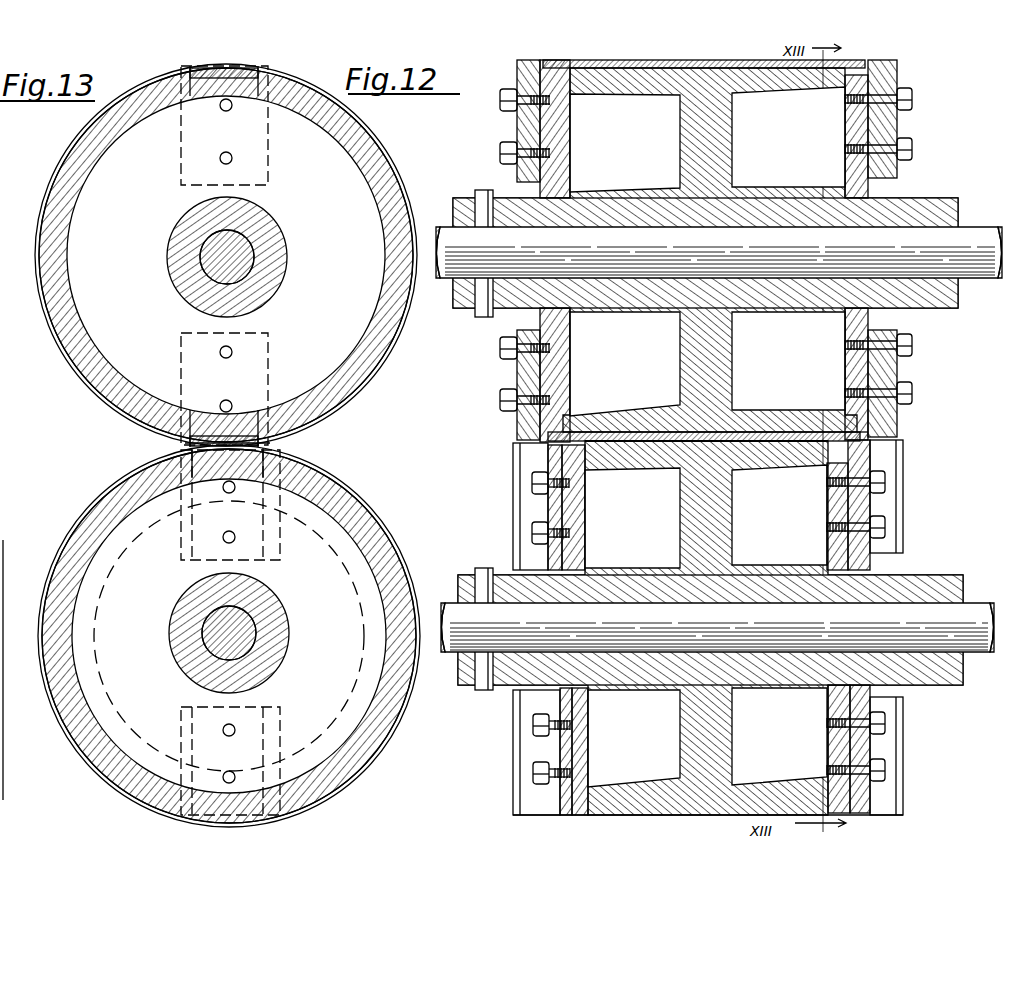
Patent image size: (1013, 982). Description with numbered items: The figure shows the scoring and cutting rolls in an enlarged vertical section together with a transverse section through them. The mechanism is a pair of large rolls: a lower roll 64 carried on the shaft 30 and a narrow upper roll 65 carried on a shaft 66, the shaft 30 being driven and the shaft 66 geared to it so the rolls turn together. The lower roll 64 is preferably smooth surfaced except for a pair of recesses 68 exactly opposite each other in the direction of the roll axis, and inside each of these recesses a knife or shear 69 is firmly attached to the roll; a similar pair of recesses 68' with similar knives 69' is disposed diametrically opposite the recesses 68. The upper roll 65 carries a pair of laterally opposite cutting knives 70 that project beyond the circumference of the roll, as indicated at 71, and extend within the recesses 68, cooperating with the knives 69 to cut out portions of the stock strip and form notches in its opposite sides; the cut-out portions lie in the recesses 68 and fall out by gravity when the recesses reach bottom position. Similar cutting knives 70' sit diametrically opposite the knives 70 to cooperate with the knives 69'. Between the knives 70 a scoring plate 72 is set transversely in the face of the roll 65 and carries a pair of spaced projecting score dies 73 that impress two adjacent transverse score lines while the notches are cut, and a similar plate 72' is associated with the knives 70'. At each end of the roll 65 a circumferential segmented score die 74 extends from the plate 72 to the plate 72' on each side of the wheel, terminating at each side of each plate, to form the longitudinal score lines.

In FIG. 13, the shaft 30 is at (216, 627).
In FIG. 12, the shaft 30 is at (920, 605).
In FIG. 13, the lower roll 64 is at (80, 538).
In FIG. 12, the lower roll 64 is at (738, 800).
In FIG. 13, the upper roll 65 is at (48, 268).
In FIG. 12, the upper roll 65 is at (693, 97).
In FIG. 13, the shaft 66 is at (240, 262).
In FIG. 12, the shaft 66 is at (962, 238).
In FIG. 12, the recesses 68 is at (714, 505).
In FIG. 12, the recesses 68' is at (708, 752).
In FIG. 13, the knife or shear 69 is at (229, 610).
In FIG. 12, the knife or shear 69 is at (716, 505).
In FIG. 13, the knives or shears 69' is at (261, 744).
In FIG. 12, the knives or shears 69' is at (708, 750).
In FIG. 13, the cutting knives 70 is at (249, 389).
In FIG. 12, the cutting knives 70 is at (707, 375).
In FIG. 13, the cutting knives 70' is at (251, 128).
In FIG. 12, the cutting knives 70' is at (706, 129).
In FIG. 13, the projection of cutting knives 71 is at (190, 443).
In FIG. 12, the projection of cutting knives 71 is at (880, 441).
In FIG. 13, the scoring plate 72 is at (249, 409).
In FIG. 12, the scoring plate 72 is at (704, 407).
In FIG. 13, the scoring plate 72' is at (193, 116).
In FIG. 12, the scoring plate 72' is at (704, 104).
In FIG. 13, the score dies 73 is at (283, 443).
In FIG. 12, the score dies 73 is at (752, 440).
In FIG. 13, the circumferential segmented score die 74 is at (67, 364).